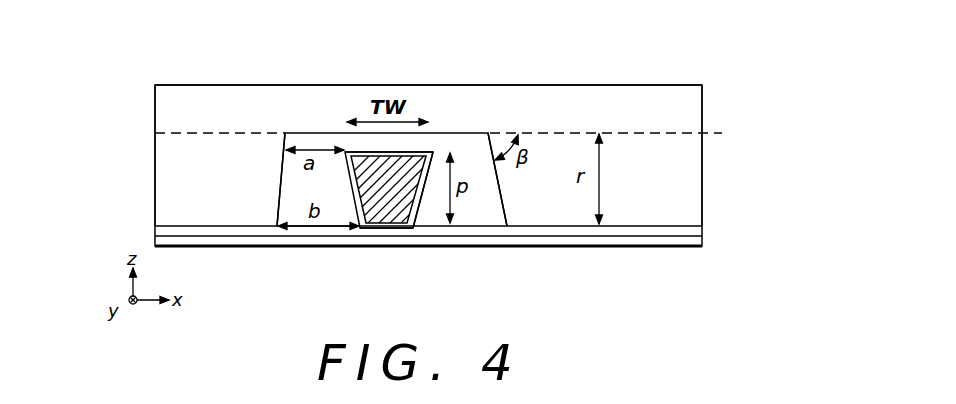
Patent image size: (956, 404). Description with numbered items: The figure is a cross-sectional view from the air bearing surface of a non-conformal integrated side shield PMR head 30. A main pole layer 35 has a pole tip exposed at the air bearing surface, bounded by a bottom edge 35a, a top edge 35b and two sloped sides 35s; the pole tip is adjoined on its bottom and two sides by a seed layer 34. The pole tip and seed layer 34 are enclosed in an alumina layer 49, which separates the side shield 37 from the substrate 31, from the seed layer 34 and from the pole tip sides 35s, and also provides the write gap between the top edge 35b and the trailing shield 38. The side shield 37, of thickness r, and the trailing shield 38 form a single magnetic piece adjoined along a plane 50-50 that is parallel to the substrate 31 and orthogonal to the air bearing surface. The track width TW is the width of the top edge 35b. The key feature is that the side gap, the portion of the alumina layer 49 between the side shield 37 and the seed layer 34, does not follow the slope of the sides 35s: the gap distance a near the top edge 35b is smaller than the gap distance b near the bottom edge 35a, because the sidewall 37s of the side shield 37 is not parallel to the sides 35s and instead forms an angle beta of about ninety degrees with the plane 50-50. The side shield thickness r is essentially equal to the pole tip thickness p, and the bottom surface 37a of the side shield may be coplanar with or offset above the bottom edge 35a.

The non-conformal integrated side shield PMR head 30 is at (704, 82).
The substrate 31 is at (685, 242).
The seed layer 34 is at (366, 229).
The main pole layer 35 is at (386, 224).
The bottom edge 35a is at (398, 225).
The top edge 35b is at (349, 150).
The sides 35s is at (418, 195).
The side shield 37 is at (178, 182).
The bottom surface of the side shield 37a is at (636, 228).
The sidewall of side shield 37s is at (275, 210).
The trailing shield 38 is at (458, 100).
The alumina layer 49 is at (292, 200).
The plane 50 is at (146, 133).